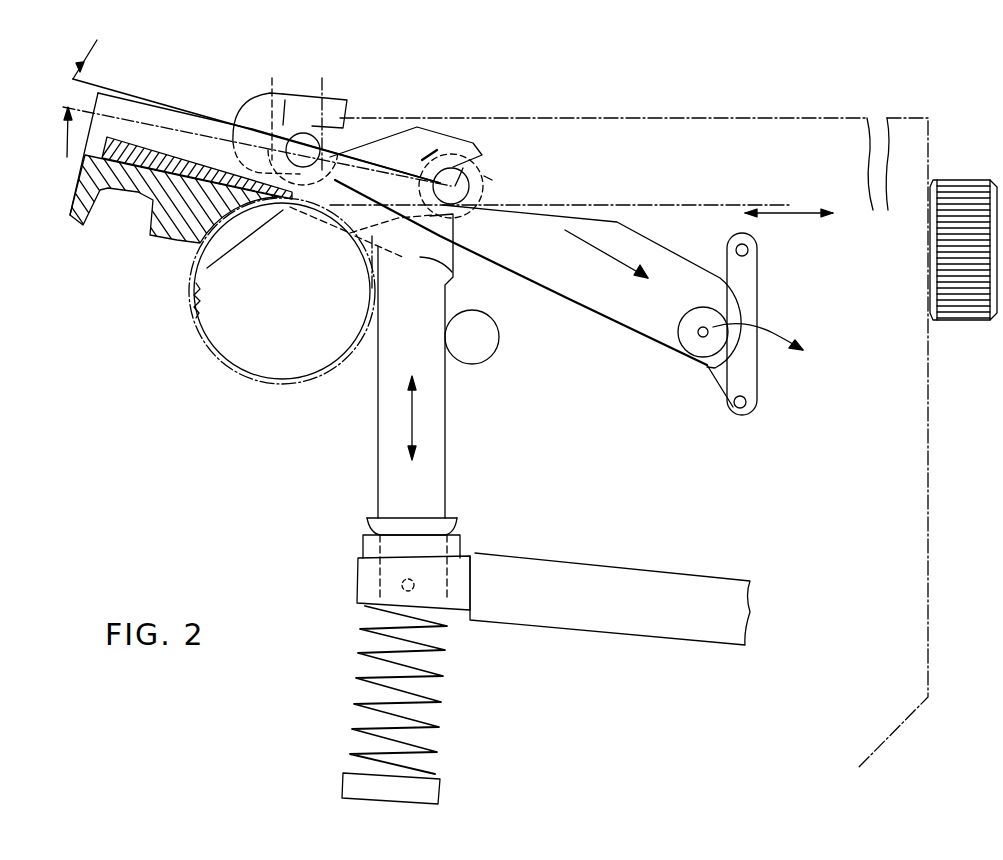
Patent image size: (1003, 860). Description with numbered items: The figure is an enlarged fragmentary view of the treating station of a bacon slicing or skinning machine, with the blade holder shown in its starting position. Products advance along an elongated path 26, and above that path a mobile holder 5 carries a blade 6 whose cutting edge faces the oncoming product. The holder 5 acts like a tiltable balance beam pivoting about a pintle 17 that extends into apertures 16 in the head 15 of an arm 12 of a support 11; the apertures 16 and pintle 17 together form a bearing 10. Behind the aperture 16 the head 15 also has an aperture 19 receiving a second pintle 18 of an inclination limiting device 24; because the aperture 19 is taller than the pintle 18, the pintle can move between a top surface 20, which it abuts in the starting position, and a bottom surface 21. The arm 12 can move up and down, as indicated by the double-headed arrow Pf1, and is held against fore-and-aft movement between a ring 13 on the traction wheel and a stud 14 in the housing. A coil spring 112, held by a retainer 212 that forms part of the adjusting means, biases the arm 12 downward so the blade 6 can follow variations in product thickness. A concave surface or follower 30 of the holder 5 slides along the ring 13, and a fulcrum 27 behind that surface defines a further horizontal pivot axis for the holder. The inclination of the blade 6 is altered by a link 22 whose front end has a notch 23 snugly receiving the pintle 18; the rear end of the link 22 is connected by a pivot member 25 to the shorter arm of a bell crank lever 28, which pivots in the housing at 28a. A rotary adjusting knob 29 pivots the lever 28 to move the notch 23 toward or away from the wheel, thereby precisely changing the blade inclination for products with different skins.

The holder 5 is at (133, 108).
The concave surface or follower 30 is at (217, 212).
The bearing 10 is at (266, 113).
The head 15 is at (345, 103).
The pintle 17 is at (310, 133).
The aperture 16 is at (333, 145).
The blade 6 is at (333, 153).
The pintle 18 is at (473, 176).
The top surface 20 is at (463, 167).
The notch or socket 23 is at (408, 178).
The aperture 19 is at (480, 176).
The path 26 is at (747, 200).
The link 22 is at (613, 225).
The pivot member 25 is at (745, 313).
The bell crank lever 28 is at (748, 383).
The pivot of bell crank lever 28a is at (732, 408).
The rotary adjusting knob 29 is at (967, 307).
The ring 13 is at (212, 350).
The fulcrum 27 is at (198, 268).
The bottom surface 21 is at (350, 233).
The inclination limiting device 24 is at (377, 258).
The support 11 is at (452, 273).
The abutment or stud 14 is at (480, 348).
The double-headed arrow Pf1 is at (413, 413).
The arm 12 is at (388, 488).
The coil spring 112 is at (430, 677).
The retainer 212 is at (437, 783).